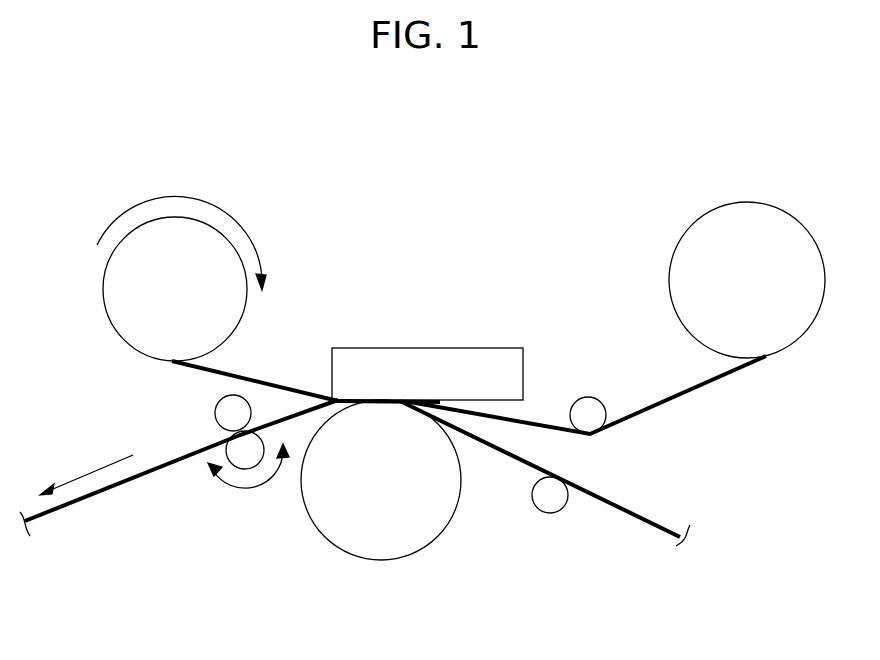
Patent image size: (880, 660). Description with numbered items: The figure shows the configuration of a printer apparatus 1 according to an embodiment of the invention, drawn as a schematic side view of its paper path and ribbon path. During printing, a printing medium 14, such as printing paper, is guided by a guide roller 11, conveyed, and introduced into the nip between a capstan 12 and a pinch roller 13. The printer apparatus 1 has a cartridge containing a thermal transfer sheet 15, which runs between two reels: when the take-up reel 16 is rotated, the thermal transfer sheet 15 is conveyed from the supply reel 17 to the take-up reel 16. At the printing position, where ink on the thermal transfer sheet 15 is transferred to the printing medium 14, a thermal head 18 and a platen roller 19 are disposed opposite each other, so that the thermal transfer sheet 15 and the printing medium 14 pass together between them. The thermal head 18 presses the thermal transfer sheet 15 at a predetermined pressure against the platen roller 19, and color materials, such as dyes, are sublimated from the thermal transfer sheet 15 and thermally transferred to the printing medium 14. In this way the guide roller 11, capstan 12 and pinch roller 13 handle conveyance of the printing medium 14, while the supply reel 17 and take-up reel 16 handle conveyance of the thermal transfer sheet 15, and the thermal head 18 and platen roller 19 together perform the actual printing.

The printer apparatus 1 is at (610, 130).
The guide roller 11 is at (590, 406).
The capstan 12 is at (241, 463).
The pinch roller 13 is at (220, 413).
The printing medium 14 is at (657, 522).
The thermal transfer sheet 15 is at (672, 402).
The take-up reel 16 is at (118, 291).
The supply reel 17 is at (743, 218).
The thermal head 18 is at (425, 352).
The platen roller 19 is at (389, 562).